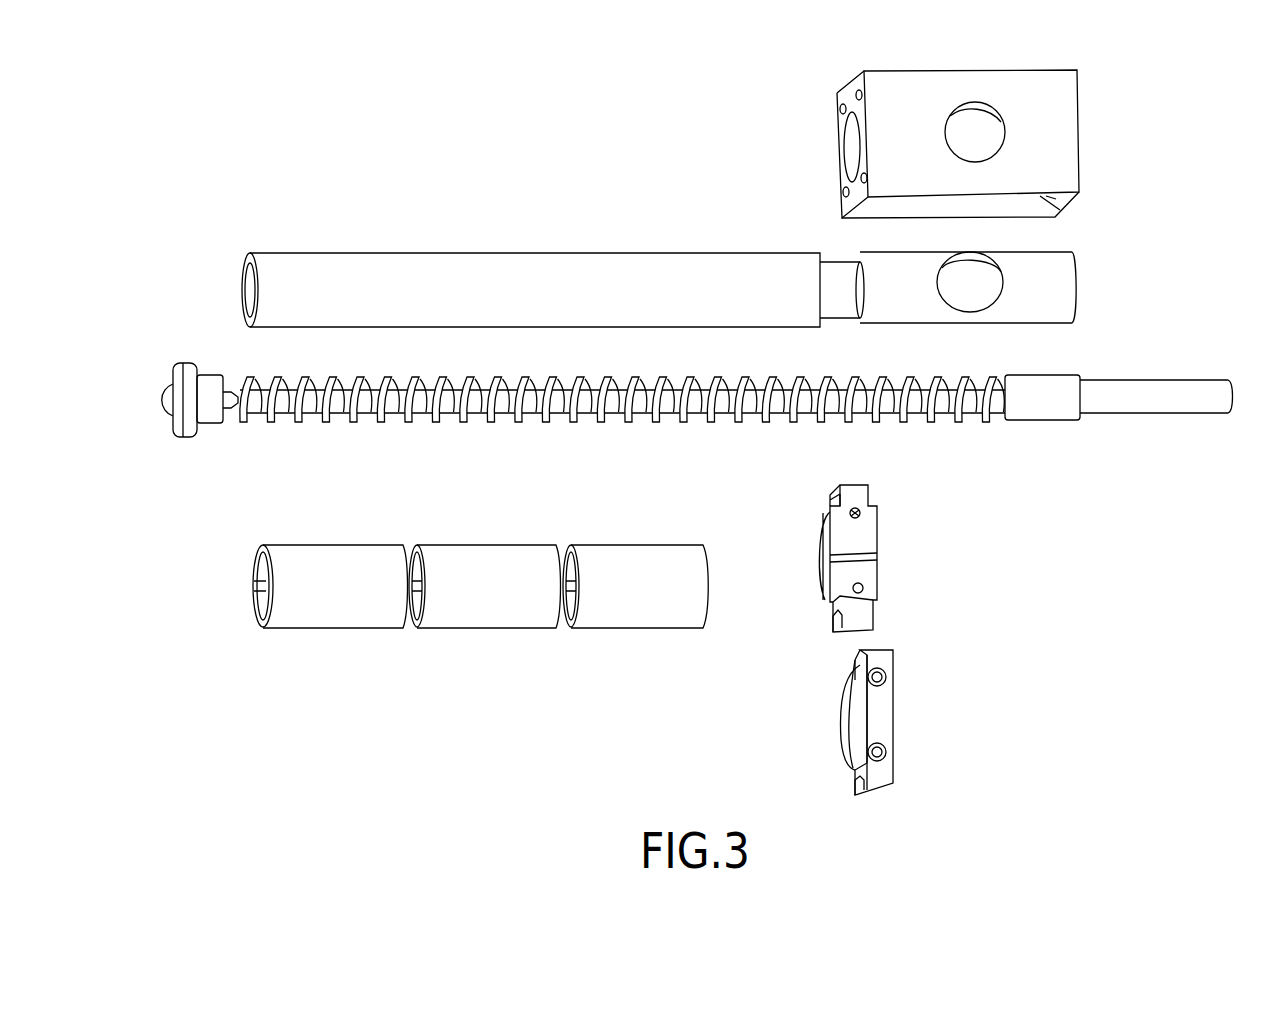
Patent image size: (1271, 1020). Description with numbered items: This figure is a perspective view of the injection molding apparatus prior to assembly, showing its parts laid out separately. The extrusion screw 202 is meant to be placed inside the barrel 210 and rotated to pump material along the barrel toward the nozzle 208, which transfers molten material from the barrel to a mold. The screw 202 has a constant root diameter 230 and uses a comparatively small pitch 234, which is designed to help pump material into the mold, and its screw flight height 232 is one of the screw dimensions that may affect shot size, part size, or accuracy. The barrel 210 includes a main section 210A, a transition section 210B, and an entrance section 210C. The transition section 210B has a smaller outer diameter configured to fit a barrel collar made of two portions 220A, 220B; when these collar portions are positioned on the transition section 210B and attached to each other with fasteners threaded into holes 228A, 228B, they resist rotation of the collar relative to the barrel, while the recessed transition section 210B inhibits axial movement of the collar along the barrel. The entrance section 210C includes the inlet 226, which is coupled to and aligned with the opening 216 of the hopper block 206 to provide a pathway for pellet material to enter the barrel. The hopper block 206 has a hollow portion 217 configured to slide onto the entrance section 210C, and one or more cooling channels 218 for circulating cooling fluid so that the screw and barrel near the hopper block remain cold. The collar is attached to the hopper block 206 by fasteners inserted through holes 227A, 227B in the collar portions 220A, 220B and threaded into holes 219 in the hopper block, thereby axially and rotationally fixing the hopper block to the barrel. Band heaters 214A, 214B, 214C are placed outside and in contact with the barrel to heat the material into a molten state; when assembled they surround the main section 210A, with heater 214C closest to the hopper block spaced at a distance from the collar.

The extrusion screw 202 is at (668, 430).
The hopper block 206 is at (996, 145).
The nozzle 208 is at (170, 405).
The barrel 210 is at (698, 255).
The main section 210A is at (421, 276).
The transition section 210B is at (840, 306).
The entrance section 210C is at (1024, 296).
The band heater 214A is at (327, 605).
The band heater 214B is at (483, 605).
The band heater 214C is at (640, 605).
The hopper block opening 216 is at (980, 132).
The hollow portion 217 is at (853, 148).
The cooling channels 218 is at (1050, 197).
The holes 219 is at (840, 110).
The collar portion 220A is at (867, 569).
The collar portion 220B is at (886, 735).
The barrel inlet 226 is at (990, 282).
The hole 227A is at (838, 612).
The hole 227B is at (858, 779).
The hole 228A is at (862, 513).
The hole 228B is at (888, 762).
The root diameter 230 is at (440, 410).
The screw flight height 232 is at (408, 392).
The pitch 234 is at (627, 424).